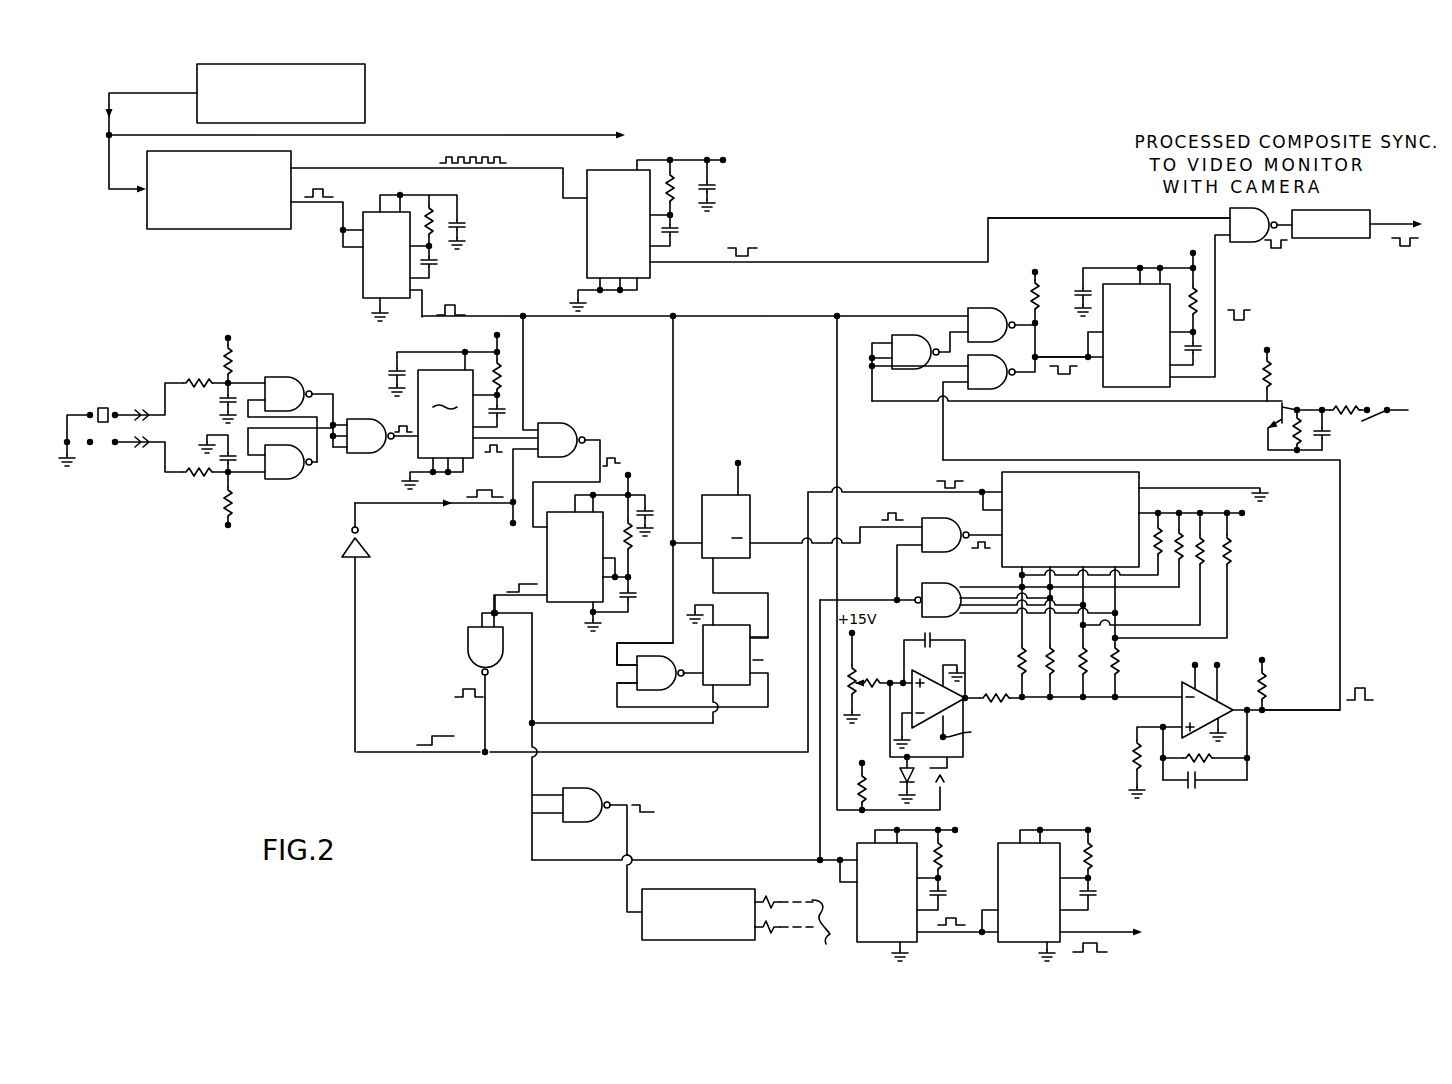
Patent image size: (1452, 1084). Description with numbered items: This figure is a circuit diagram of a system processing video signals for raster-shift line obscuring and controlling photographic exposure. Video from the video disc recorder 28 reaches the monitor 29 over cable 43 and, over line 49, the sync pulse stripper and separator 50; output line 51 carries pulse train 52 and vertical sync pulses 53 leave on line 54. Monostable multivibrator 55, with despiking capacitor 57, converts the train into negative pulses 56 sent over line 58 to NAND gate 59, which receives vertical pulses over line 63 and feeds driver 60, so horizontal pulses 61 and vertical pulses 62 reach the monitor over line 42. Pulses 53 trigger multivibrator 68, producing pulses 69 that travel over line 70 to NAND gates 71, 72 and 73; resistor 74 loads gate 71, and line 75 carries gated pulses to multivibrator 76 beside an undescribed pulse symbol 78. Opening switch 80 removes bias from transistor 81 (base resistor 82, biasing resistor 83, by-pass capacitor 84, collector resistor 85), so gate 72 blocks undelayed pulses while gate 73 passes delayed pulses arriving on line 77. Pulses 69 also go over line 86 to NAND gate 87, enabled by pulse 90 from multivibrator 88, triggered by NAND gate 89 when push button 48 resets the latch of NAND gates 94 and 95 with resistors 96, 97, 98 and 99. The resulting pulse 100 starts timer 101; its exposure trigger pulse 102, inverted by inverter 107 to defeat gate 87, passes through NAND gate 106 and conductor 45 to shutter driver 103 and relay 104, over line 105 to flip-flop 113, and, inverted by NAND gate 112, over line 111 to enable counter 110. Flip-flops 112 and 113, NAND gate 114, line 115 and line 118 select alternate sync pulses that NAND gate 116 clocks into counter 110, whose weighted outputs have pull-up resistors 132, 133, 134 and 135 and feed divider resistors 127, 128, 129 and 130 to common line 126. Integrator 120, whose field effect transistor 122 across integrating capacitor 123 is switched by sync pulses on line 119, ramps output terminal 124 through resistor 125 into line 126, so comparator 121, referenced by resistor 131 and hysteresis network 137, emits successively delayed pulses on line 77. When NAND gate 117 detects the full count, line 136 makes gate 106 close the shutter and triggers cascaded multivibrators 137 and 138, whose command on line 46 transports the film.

The video disc recorder 28 is at (365, 93).
The video signal to monitor 29 is at (693, 122).
The processed composite sync output 42 is at (1385, 246).
The video signal line 43 is at (463, 131).
The shutter driver input line 45 is at (627, 882).
The output pulse line 46 is at (1120, 930).
The switch 48 is at (101, 408).
The video input line 49 is at (109, 182).
The sync pulse stripper and separator 50 is at (190, 229).
The composite sync line 51 is at (323, 168).
The sync pulse train 52 is at (512, 159).
The vertical sync pulse 53 is at (334, 188).
The monostable input connection 54 is at (334, 220).
The monostable multivibrator 55 is at (609, 170).
The delayed pulse line 56 is at (759, 250).
The capacitor 57 is at (713, 188).
The sync line to gate 58 is at (1049, 218).
The NAND gate 59 is at (1251, 252).
The driver 60 is at (1338, 238).
The output pulse 61 is at (1284, 250).
The gating pulse 62 is at (1246, 323).
The gate input line 63 is at (1215, 277).
The monostable multivibrator 68 is at (363, 279).
The output pulse 69 is at (455, 308).
The pulse bus line 70 is at (745, 316).
The NAND gate 71 is at (984, 308).
The NAND gate 72 is at (900, 335).
The NAND gate 73 is at (988, 392).
The pull-up resistor 74 is at (1042, 293).
The junction node 75 is at (1040, 357).
The monostable multivibrator 76 is at (1108, 387).
The feedback line 77 is at (1343, 517).
The pulse waveform 78 is at (1067, 374).
The switch 80 is at (1375, 422).
The transistor 81 is at (1291, 398).
The resistor 82 is at (1340, 406).
The resistor 83 is at (1308, 450).
The capacitor 84 is at (1328, 432).
The resistor 85 is at (1263, 373).
The connecting line 86 is at (523, 345).
The NAND gate 87 is at (565, 420).
The monostable multivibrator 88 is at (463, 408).
The NAND gate 89 is at (358, 418).
The pulse waveform 90 is at (485, 453).
The NAND gate 94 is at (290, 377).
The NAND gate 95 is at (285, 480).
The resistor 96 is at (225, 355).
The resistor 97 is at (195, 380).
The resistor 98 is at (225, 495).
The resistor 99 is at (195, 478).
The pulse waveform 100 is at (615, 460).
The monostable multivibrator 101 is at (547, 550).
The pulse waveform 102 is at (526, 587).
The shutter driver 103 is at (660, 940).
The shutter driver output leads 104 is at (794, 929).
The connecting line 105 is at (532, 670).
The NAND gate 106 is at (590, 790).
The inverter 107 is at (372, 532).
The counter 110 is at (1098, 472).
The signal line 111 is at (879, 492).
The flip-flop and NAND gate 112 is at (468, 655).
The flip-flop 113 is at (726, 625).
The NAND gate 114 is at (637, 678).
The connecting line 115 is at (673, 380).
The NAND gate 116 is at (932, 552).
The gate output lines 117 is at (930, 616).
The connecting line 118 is at (740, 708).
The connecting line 119 is at (837, 413).
The NAND gate 120 is at (890, 648).
The operational amplifier 121 is at (1234, 676).
The transistor switch 122 is at (950, 763).
The capacitor 123 is at (935, 641).
The operational amplifier 124 is at (965, 698).
The resistor 125 is at (1005, 703).
The summing line 126 is at (1123, 701).
The resistor 127 is at (1024, 650).
The resistor 128 is at (1054, 652).
The resistor 129 is at (1115, 613).
The resistor 130 is at (1145, 638).
The resistor 131 is at (1132, 764).
The resistor 132 is at (1163, 520).
The resistor 133 is at (1180, 545).
The resistor 134 is at (1202, 545).
The resistor 135 is at (1230, 543).
The connecting line 136 is at (867, 599).
The monostable multivibrator and capacitor 137 is at (885, 942).
The monostable multivibrator 138 is at (1022, 942).